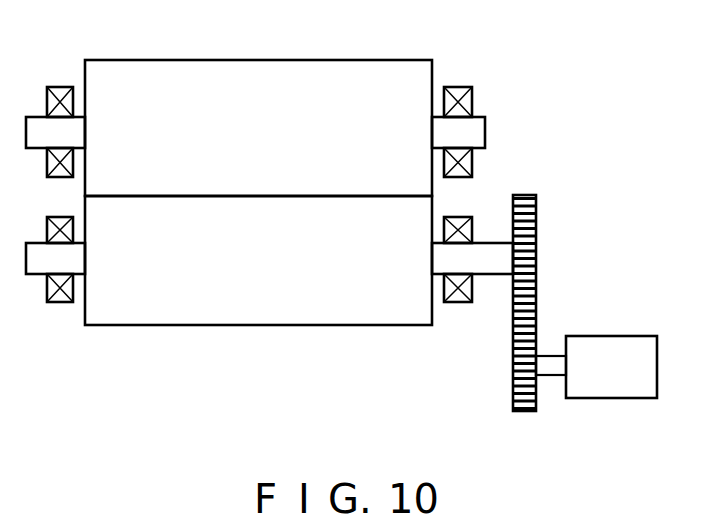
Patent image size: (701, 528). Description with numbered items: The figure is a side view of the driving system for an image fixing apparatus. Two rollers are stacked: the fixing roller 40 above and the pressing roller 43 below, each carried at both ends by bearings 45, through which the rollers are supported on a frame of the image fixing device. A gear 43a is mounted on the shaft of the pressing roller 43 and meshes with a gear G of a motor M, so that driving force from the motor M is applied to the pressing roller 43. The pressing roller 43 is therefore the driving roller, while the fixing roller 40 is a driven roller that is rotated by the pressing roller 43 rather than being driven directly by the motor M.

The fixing roller 40 is at (308, 58).
The pressing roller 43 is at (266, 325).
The gear 43a is at (537, 207).
The bearings 45 is at (60, 87).
The gear G is at (513, 398).
The motor M is at (608, 334).